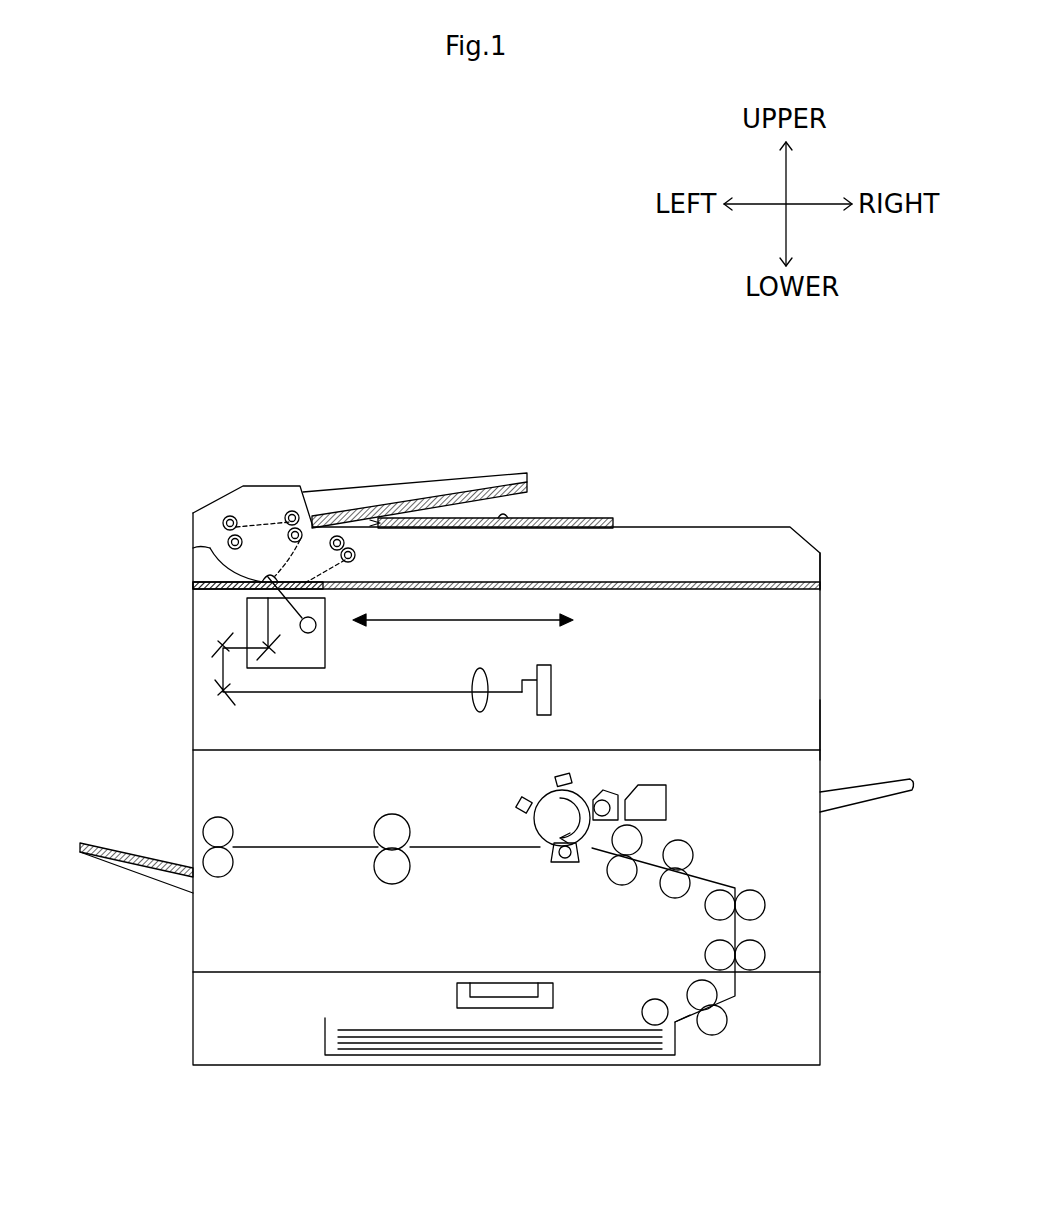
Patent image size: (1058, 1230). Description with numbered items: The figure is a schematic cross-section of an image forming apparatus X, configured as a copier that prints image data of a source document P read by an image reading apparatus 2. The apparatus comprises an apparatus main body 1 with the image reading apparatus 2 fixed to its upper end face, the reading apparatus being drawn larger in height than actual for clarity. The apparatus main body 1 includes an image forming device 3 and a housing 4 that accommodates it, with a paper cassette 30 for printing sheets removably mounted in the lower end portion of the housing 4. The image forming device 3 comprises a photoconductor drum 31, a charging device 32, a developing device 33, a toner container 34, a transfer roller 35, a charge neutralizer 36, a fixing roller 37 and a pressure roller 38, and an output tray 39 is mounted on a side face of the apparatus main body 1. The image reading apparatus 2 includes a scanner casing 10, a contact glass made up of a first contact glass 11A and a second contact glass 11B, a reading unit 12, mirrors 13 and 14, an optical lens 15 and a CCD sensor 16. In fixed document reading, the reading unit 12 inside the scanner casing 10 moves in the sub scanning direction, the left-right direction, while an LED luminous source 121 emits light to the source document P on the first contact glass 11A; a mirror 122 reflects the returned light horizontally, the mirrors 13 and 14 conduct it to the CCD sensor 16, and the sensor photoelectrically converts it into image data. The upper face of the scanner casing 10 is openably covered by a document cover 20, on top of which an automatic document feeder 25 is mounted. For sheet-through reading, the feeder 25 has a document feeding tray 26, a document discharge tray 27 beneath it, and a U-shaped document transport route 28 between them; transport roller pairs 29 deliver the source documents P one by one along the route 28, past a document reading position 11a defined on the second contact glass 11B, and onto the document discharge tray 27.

The apparatus main body 1 is at (842, 960).
The image reading apparatus 2 is at (846, 700).
The image forming device 3 is at (735, 845).
The housing 4 is at (823, 896).
The scanner casing 10 is at (823, 745).
The first contact glass 11A is at (622, 590).
The second contact glass 11B is at (255, 587).
The document reading position 11a is at (275, 568).
The reading unit 12 is at (328, 606).
The LED luminous source 121 is at (317, 630).
The mirror 122 is at (268, 665).
The mirror 13 is at (218, 648).
The mirror 14 is at (222, 700).
The optical lens 15 is at (478, 668).
The CCD sensor 16 is at (540, 665).
The document cover 20 is at (823, 577).
The automatic document feeder 25 is at (561, 466).
The document feeding tray 26 is at (477, 479).
The document discharge tray 27 is at (500, 530).
The document transport route 28 is at (205, 547).
The transport roller pairs 29 is at (356, 556).
The paper cassette 30 is at (680, 1035).
The photoconductor drum 31 is at (545, 842).
The charging device 32 is at (553, 778).
The developing device 33 is at (612, 795).
The toner container 34 is at (668, 800).
The transfer roller 35 is at (565, 863).
The charge neutralizer 36 is at (518, 801).
The fixing roller 37 is at (392, 814).
The pressure roller 38 is at (378, 880).
The output tray 39 is at (162, 880).
The source document P is at (420, 493).
The image forming apparatus X is at (170, 460).